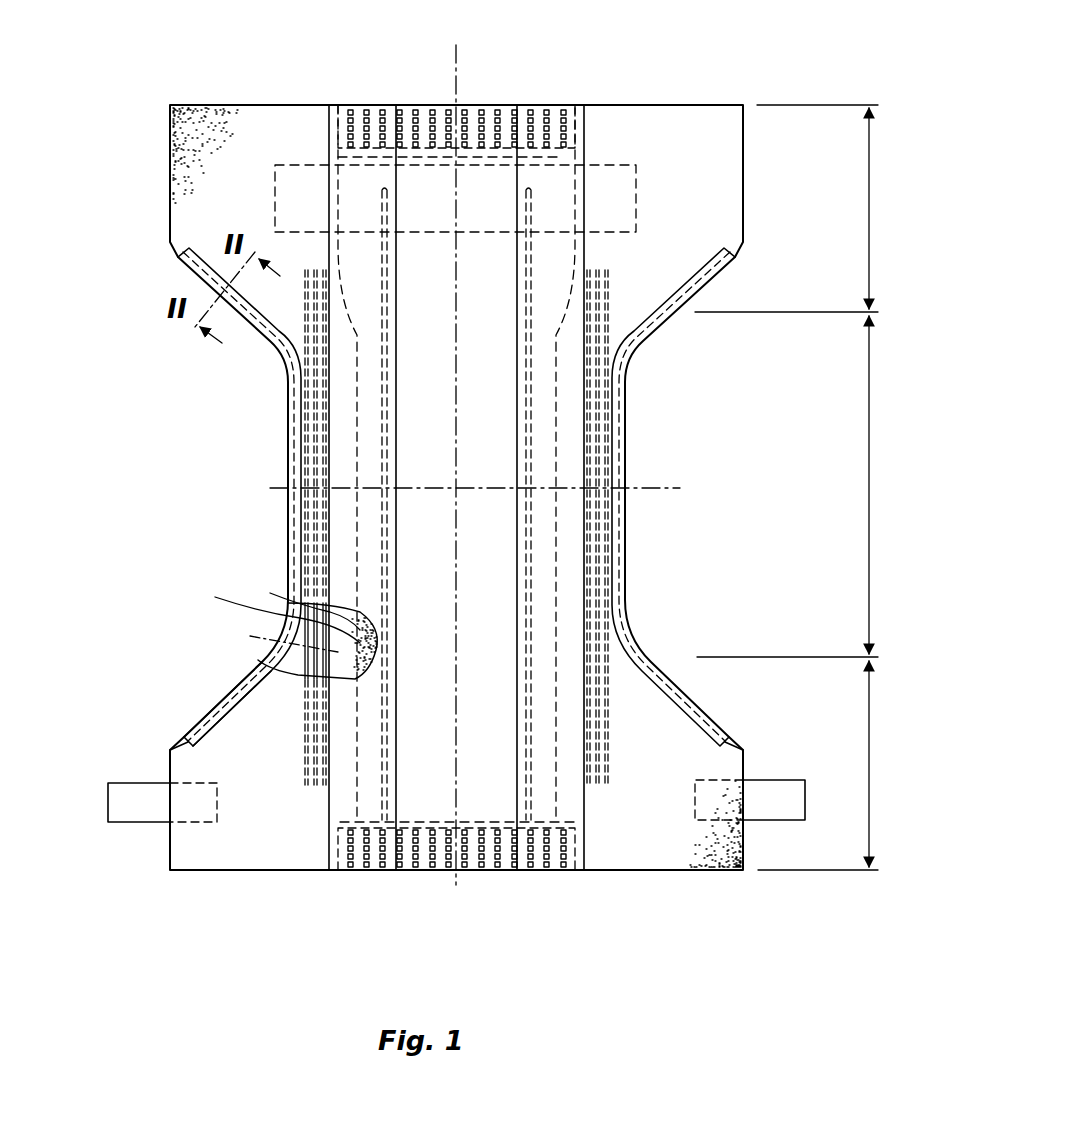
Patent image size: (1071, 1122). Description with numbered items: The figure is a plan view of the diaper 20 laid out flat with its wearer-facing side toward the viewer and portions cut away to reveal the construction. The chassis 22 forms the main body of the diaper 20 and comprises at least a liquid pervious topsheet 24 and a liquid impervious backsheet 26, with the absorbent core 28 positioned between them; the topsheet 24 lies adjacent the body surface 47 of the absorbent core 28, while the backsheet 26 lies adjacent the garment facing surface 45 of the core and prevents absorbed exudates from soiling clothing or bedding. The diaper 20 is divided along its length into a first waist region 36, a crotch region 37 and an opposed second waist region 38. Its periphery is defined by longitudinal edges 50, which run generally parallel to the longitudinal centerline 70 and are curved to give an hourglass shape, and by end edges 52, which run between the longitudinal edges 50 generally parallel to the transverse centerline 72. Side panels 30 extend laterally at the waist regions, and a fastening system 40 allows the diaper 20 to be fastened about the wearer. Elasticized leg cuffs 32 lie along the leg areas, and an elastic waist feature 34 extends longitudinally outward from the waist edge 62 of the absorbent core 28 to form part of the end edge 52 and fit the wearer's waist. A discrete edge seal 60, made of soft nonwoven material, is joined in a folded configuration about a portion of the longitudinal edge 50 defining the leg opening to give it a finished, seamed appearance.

The diaper 20 is at (126, 108).
The chassis 22 is at (441, 272).
The topsheet 24 is at (495, 367).
The backsheet 26 is at (277, 658).
The absorbent core 28 is at (303, 597).
The side panels 30 is at (232, 136).
The elasticized leg cuffs 32 is at (565, 670).
The elastic waist feature 34 is at (549, 110).
The first waist region 36 is at (869, 222).
The crotch region 37 is at (869, 487).
The second waist region 38 is at (869, 748).
The fastening system 40 is at (130, 835).
The garment facing surface 45 is at (274, 636).
The body surface 47 is at (276, 604).
The longitudinal edges 50 is at (293, 392).
The end edges 52 is at (418, 105).
The edge seal 60 is at (184, 723).
The waist edge 62 is at (563, 157).
The longitudinal centerline 70 is at (458, 70).
The transverse centerline 72 is at (676, 488).